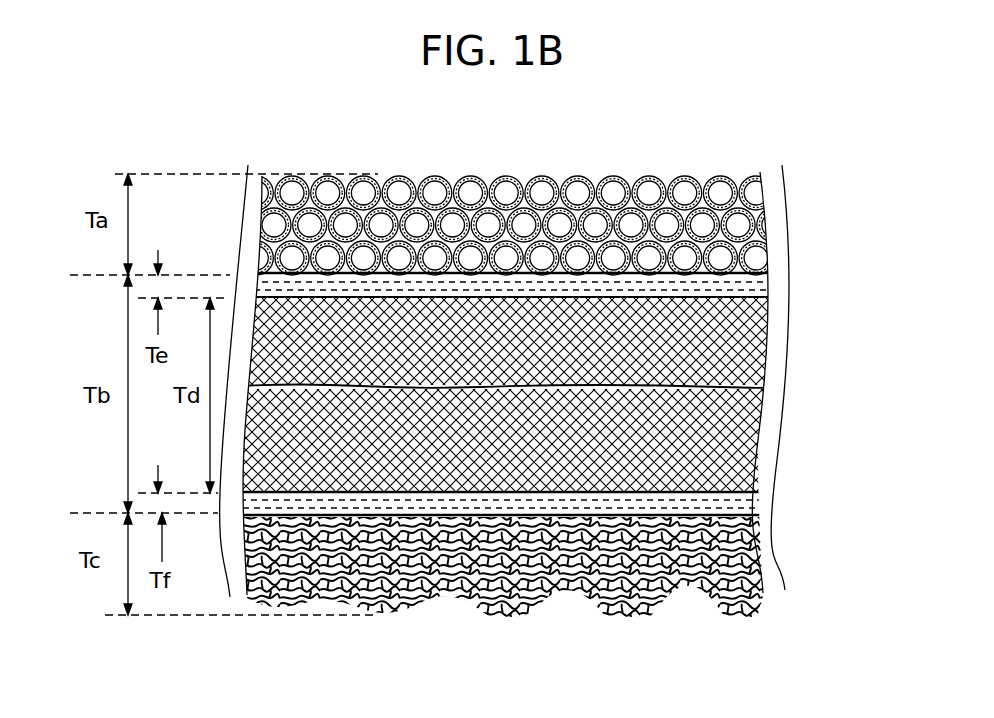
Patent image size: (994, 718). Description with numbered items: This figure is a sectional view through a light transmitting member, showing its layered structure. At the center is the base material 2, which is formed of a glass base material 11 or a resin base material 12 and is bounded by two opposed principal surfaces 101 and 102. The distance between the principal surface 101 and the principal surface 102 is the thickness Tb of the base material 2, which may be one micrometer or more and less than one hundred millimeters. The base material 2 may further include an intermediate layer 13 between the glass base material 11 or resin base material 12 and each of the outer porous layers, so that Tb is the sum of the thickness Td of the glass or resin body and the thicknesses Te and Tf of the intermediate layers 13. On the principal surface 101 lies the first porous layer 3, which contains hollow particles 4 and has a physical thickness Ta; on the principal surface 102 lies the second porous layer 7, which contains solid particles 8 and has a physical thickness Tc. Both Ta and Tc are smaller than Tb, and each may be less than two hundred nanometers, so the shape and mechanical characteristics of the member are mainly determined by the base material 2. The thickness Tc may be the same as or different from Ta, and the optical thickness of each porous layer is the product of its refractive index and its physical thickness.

The base material 2 is at (596, 395).
The first porous layer 3 is at (525, 192).
The hollow particles 4 is at (578, 176).
The second porous layer 7 is at (545, 597).
The solid particles 8 is at (485, 610).
The glass base material 11 is at (568, 395).
The resin base material 12 is at (568, 395).
The intermediate layer 13 is at (795, 276).
The principal surface 101 is at (128, 274).
The principal surface 102 is at (122, 513).